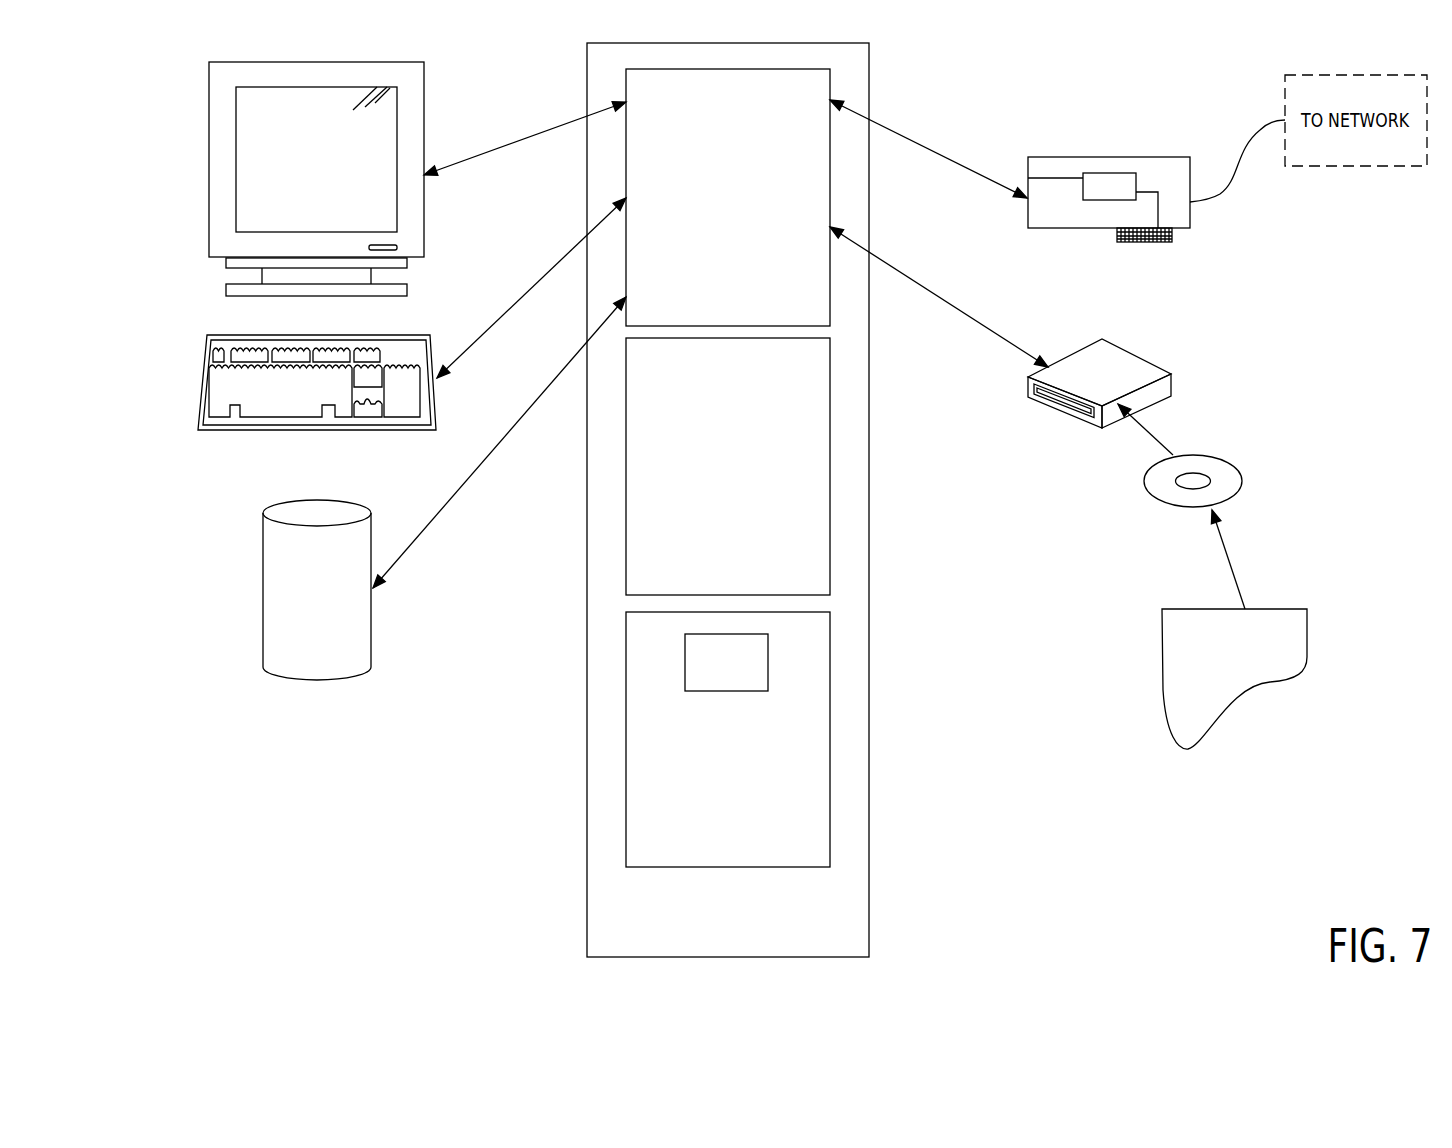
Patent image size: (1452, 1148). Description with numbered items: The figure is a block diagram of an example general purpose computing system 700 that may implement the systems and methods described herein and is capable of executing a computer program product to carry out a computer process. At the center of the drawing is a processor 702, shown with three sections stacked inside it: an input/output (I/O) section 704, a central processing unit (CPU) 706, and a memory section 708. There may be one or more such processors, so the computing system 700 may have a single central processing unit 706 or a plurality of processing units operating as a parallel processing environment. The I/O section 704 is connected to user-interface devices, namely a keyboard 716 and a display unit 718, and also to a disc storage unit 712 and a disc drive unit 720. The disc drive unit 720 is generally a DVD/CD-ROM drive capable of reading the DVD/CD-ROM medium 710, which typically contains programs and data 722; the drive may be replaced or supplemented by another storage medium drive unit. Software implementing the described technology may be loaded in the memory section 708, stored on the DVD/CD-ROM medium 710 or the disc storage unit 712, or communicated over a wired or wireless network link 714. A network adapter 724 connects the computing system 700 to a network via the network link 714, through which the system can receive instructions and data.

The computing system 700 is at (448, 838).
The processor 702 is at (713, 930).
The input/output (I/O) section 704 is at (713, 220).
The central processing unit (CPU) 706 is at (713, 488).
The memory section 708 is at (713, 762).
The DVD/CD-ROM medium 710 is at (1240, 462).
The disc storage unit 712 is at (263, 592).
The network link 714 is at (1222, 195).
The keyboard 716 is at (262, 430).
The display unit 718 is at (209, 182).
The disc drive unit 720 is at (1102, 339).
The programs and data 722 is at (1160, 625).
The network adapter 724 is at (1073, 157).